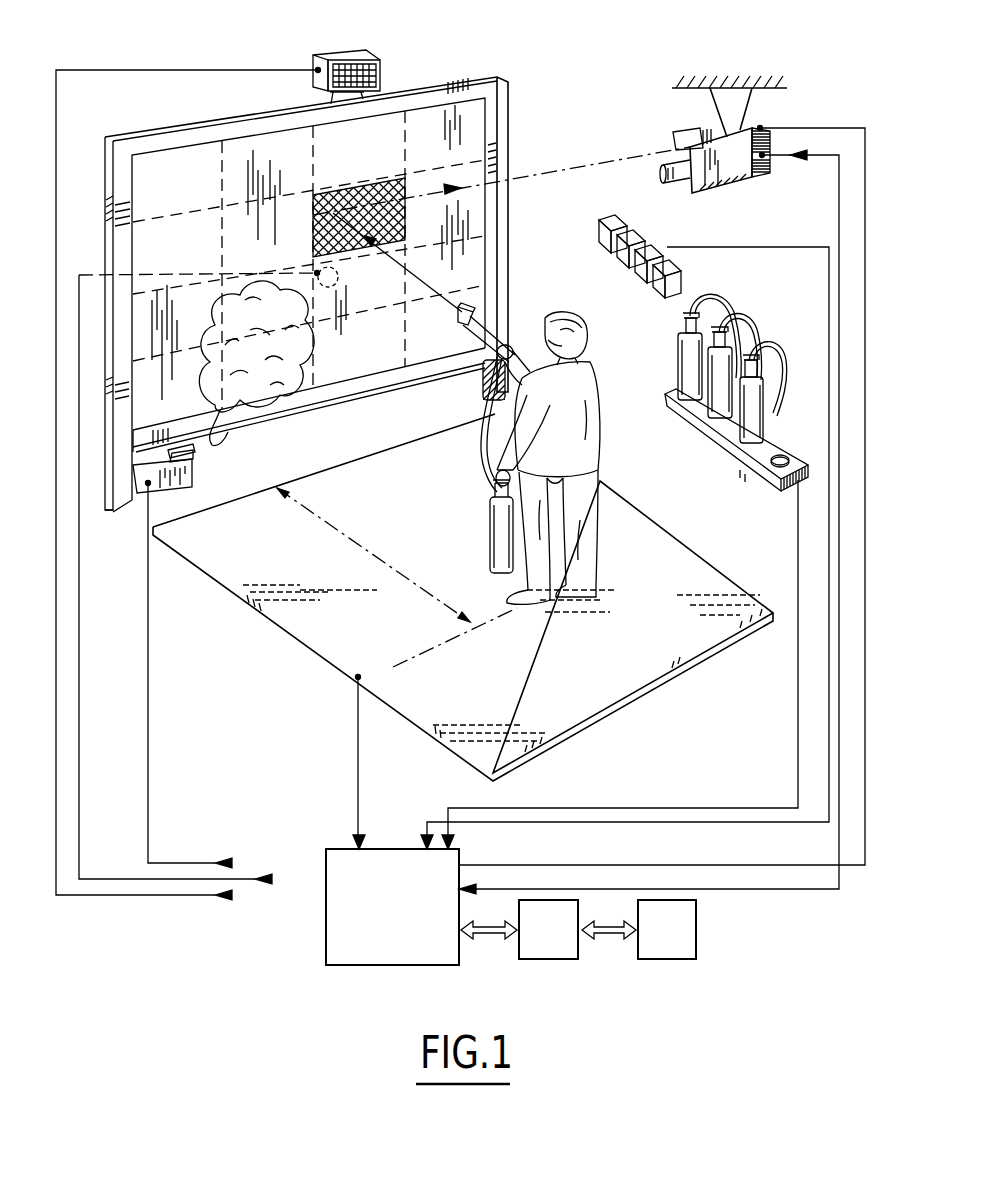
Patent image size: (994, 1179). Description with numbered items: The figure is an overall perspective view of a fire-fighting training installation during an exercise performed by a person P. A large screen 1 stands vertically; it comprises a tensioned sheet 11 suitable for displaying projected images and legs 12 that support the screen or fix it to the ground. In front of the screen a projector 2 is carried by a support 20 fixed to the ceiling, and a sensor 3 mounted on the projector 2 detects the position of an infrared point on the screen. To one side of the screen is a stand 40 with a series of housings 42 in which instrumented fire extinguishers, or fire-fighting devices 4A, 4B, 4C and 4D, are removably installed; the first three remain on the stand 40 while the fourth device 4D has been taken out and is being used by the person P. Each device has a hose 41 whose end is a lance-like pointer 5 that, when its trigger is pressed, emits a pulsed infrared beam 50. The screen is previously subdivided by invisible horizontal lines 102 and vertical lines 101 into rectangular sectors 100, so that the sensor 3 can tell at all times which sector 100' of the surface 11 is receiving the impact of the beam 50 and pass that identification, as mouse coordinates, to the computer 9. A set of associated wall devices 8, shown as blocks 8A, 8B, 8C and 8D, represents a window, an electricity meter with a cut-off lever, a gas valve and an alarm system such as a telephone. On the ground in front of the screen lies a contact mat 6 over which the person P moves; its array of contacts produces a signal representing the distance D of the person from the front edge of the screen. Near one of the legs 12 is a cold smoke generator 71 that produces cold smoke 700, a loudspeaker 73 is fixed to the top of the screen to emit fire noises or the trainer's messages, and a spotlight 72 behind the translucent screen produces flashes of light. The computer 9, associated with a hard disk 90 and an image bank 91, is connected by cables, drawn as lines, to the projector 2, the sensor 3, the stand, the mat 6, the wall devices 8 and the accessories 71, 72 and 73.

The large screen 1 is at (531, 87).
The projector 2 is at (745, 197).
The sensor 3 is at (680, 137).
The fire-fighting device 4A is at (688, 347).
The fire-fighting device 4B is at (717, 365).
The fire-fighting device 4C is at (762, 387).
The fire-fighting device 4D is at (362, 462).
The lance-like pointer 5 is at (497, 308).
The mat 6 is at (620, 668).
The associated devices 8 is at (649, 239).
The window 8A is at (624, 214).
The electricity meter 8B is at (643, 230).
The gas valve 8C is at (653, 247).
The alarm system 8D is at (662, 282).
The computer 9 is at (380, 924).
The tensioned sheet 11 is at (463, 255).
The legs 12 is at (482, 387).
The support 20 is at (732, 95).
The stand 40 is at (770, 443).
The hose 41 is at (710, 298).
The housings 42 is at (777, 457).
The infrared beam 50 is at (313, 234).
The cold smoke generator 71 is at (192, 472).
The spotlight 72 is at (343, 285).
The loudspeaker 73 is at (350, 52).
The hard disk 90 is at (536, 943).
The image bank 91 is at (655, 943).
The sensors (rectangular sectors) 100 is at (289, 294).
The sector 100' is at (501, 125).
The vertical lines 101 is at (220, 157).
The horizontal lines 102 is at (195, 210).
The cold smoke 700 is at (253, 418).
The person P is at (598, 452).
The distance D is at (397, 577).